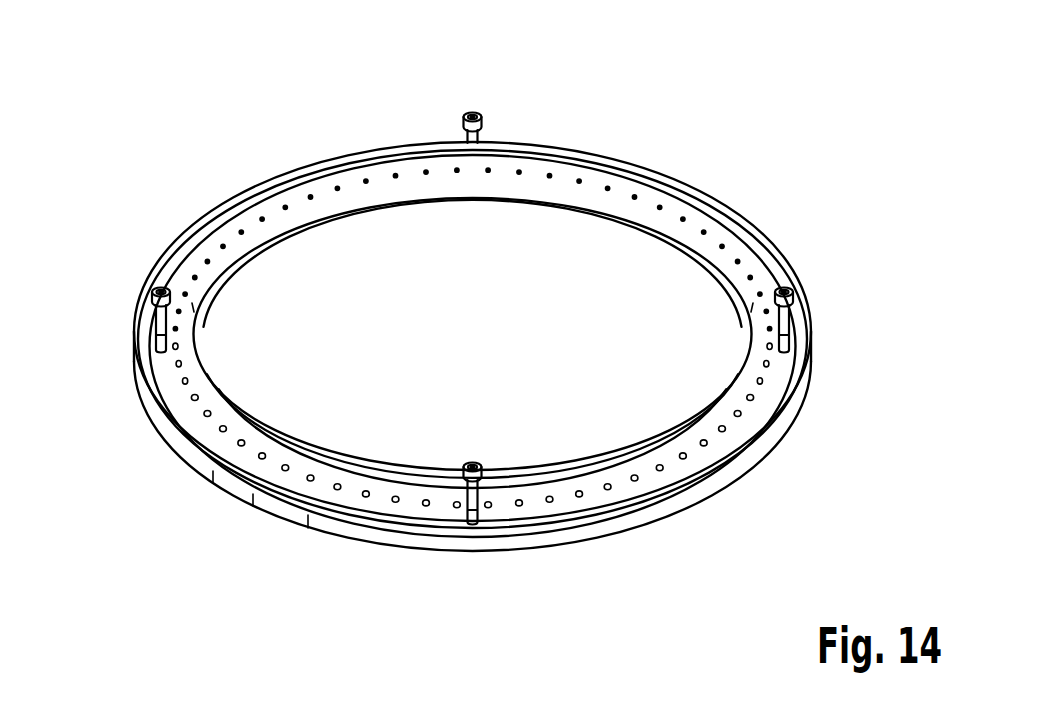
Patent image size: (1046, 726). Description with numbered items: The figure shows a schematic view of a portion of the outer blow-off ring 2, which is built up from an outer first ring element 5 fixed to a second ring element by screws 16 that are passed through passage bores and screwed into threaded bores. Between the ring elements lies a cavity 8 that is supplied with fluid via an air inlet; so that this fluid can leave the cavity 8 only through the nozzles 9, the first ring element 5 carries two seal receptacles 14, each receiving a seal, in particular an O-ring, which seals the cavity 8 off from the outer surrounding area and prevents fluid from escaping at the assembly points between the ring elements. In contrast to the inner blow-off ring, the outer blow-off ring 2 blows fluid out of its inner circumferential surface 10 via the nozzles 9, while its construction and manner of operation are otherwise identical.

The outer blow-off ring 2 is at (165, 199).
The outer first ring element 5 is at (788, 446).
The cavity 8 is at (329, 498).
The nozzles 9 is at (250, 232).
The inner circumferential surface 10 is at (558, 187).
The seal receptacles 14 is at (641, 178).
The screws 16 is at (464, 112).